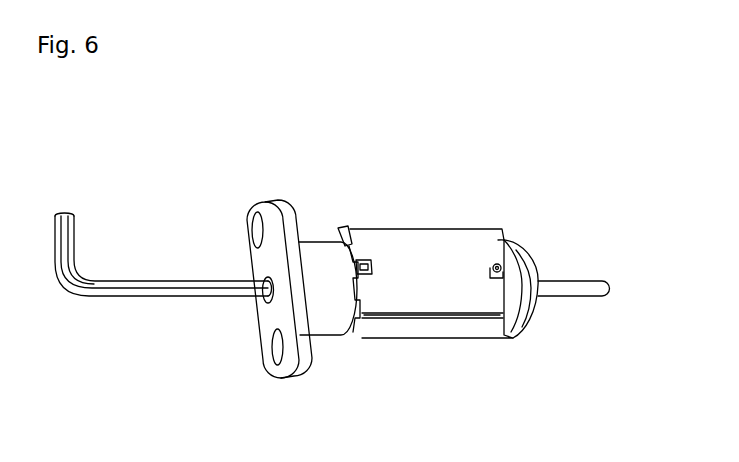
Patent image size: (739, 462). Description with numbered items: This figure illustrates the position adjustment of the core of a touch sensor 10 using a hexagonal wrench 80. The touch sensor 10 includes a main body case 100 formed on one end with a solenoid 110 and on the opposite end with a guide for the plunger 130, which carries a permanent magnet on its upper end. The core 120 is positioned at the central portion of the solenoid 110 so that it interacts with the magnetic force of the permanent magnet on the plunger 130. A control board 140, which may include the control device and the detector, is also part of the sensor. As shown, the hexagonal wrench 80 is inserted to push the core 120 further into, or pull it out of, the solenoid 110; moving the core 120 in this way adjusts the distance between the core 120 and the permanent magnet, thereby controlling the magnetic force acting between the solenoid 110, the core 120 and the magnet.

The touch sensor 10 is at (372, 205).
The hexagonal wrench 80 is at (140, 284).
The main body case 100 is at (452, 332).
The solenoid 110 is at (318, 255).
The core 120 is at (262, 298).
The plunger 130 is at (561, 284).
The control board 140 is at (393, 302).